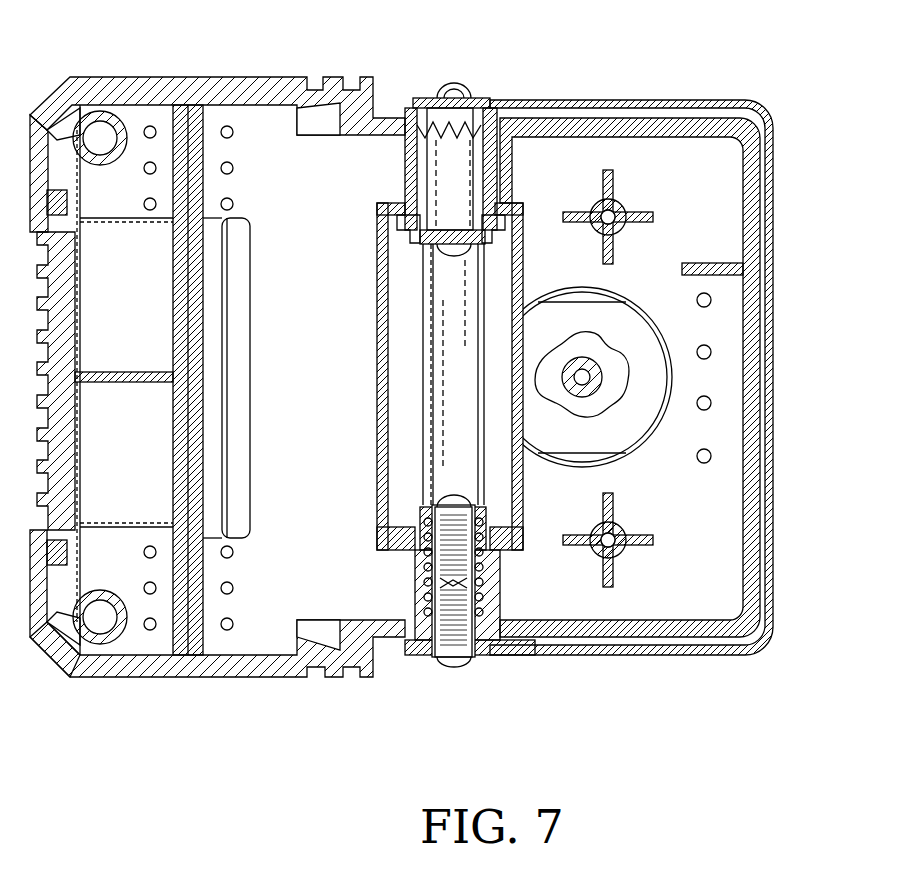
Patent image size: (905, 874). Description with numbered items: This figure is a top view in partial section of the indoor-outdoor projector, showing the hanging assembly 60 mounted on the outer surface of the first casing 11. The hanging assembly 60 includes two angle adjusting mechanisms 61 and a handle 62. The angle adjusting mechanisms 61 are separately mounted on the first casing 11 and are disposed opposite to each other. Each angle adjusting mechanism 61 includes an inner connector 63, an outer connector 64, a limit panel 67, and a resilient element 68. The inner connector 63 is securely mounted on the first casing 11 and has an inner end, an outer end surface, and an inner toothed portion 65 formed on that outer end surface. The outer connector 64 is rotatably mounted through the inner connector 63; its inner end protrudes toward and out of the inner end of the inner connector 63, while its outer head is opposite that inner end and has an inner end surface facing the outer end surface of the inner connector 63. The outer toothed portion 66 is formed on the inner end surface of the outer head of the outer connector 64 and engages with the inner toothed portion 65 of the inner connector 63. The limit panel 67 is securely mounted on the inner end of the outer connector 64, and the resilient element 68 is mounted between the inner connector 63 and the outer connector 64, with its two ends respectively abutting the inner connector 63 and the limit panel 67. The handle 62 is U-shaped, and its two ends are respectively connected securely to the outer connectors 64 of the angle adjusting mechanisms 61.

The first casing 11 is at (752, 483).
The hanging assembly 60 is at (678, 337).
The angle adjusting mechanism 61 is at (397, 160).
The handle 62 is at (768, 578).
The inner connector 63 is at (468, 170).
The outer connector 64 is at (466, 108).
The inner toothed portion 65 is at (488, 128).
The outer toothed portion 66 is at (432, 104).
The limit panel 67 is at (428, 506).
The resilient element 68 is at (426, 577).